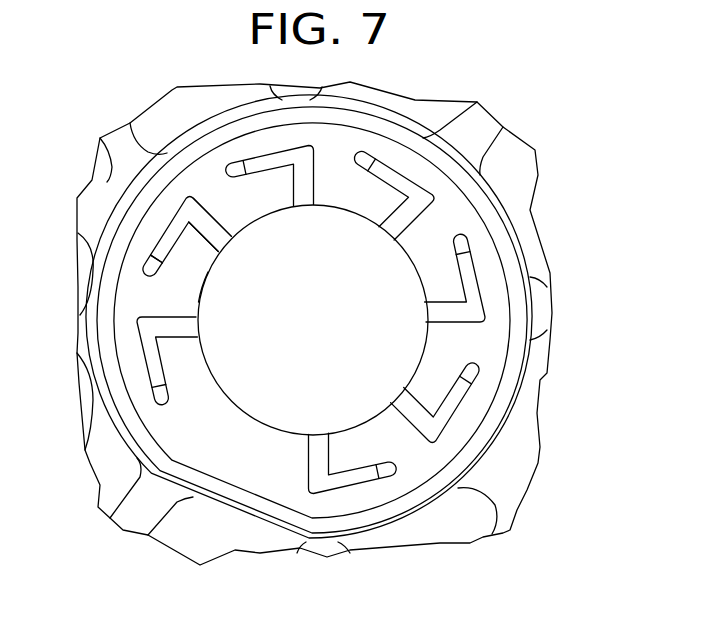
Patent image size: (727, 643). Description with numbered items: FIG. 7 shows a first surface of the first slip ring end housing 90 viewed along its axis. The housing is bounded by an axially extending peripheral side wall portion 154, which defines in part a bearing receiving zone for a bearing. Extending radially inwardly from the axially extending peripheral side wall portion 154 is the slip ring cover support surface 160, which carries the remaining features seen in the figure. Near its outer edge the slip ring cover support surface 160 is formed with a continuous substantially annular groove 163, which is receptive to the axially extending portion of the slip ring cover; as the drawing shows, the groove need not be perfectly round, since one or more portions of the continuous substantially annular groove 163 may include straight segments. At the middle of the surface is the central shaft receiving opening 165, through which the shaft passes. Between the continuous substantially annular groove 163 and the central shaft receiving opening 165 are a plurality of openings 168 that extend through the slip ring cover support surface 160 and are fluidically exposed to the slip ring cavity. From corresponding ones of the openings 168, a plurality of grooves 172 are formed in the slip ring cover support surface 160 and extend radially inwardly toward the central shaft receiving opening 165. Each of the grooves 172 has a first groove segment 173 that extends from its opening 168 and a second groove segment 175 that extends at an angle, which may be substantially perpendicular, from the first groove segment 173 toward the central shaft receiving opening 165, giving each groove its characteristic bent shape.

The first slip ring end housing 90 is at (548, 561).
The axially extending peripheral side wall portion 154 is at (524, 401).
The slip ring cover support surface 160 is at (168, 446).
The continuous substantially annular groove 163 is at (382, 524).
The central shaft receiving opening 165 is at (420, 361).
The openings 168 is at (198, 301).
The grooves 172 is at (200, 269).
The first groove segment 173 is at (170, 243).
The second groove segment 175 is at (203, 220).